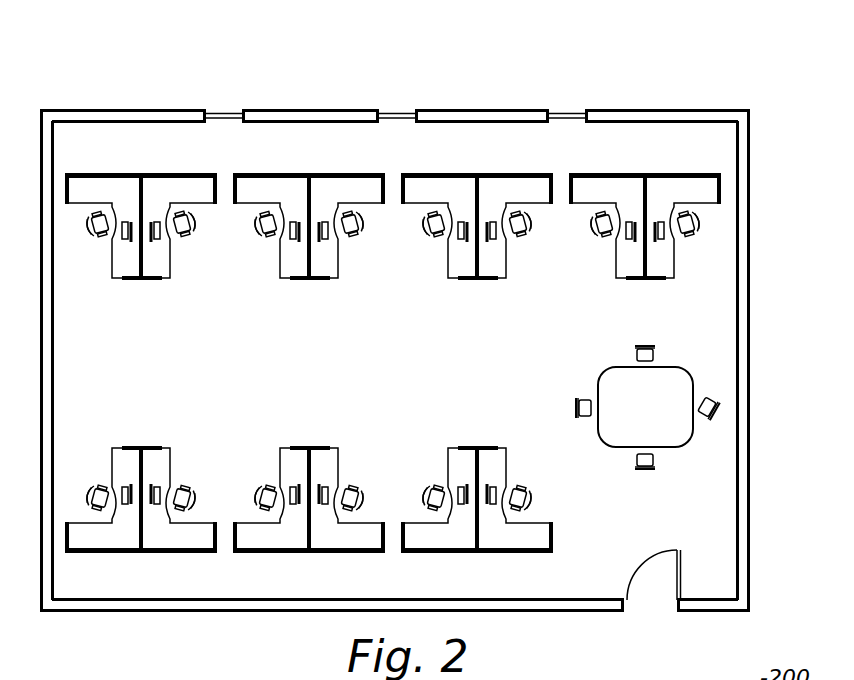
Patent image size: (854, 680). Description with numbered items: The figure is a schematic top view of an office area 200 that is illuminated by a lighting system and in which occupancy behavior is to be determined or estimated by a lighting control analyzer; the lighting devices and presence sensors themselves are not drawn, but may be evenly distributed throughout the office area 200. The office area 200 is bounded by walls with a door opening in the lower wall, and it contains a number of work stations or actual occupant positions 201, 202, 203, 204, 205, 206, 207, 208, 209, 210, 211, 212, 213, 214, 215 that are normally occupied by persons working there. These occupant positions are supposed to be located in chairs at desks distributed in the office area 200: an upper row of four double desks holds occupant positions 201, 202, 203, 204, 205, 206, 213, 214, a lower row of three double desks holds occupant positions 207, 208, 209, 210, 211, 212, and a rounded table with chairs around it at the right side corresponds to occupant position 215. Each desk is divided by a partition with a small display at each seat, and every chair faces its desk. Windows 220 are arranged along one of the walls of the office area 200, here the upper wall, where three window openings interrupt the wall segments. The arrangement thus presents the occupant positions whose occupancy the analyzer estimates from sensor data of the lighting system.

The office area 200 is at (717, 93).
The occupant position 201 is at (104, 236).
The occupant position 202 is at (166, 237).
The occupant position 203 is at (274, 250).
The occupant position 204 is at (338, 245).
The occupant position 205 is at (442, 248).
The occupant position 206 is at (506, 245).
The occupant position 207 is at (107, 488).
The occupant position 208 is at (190, 480).
The occupant position 209 is at (277, 487).
The occupant position 210 is at (358, 477).
The occupant position 211 is at (440, 478).
The occupant position 212 is at (535, 487).
The occupant position 213 is at (608, 245).
The occupant position 214 is at (711, 238).
The occupant position 215 is at (575, 398).
The windows 220 is at (228, 107).